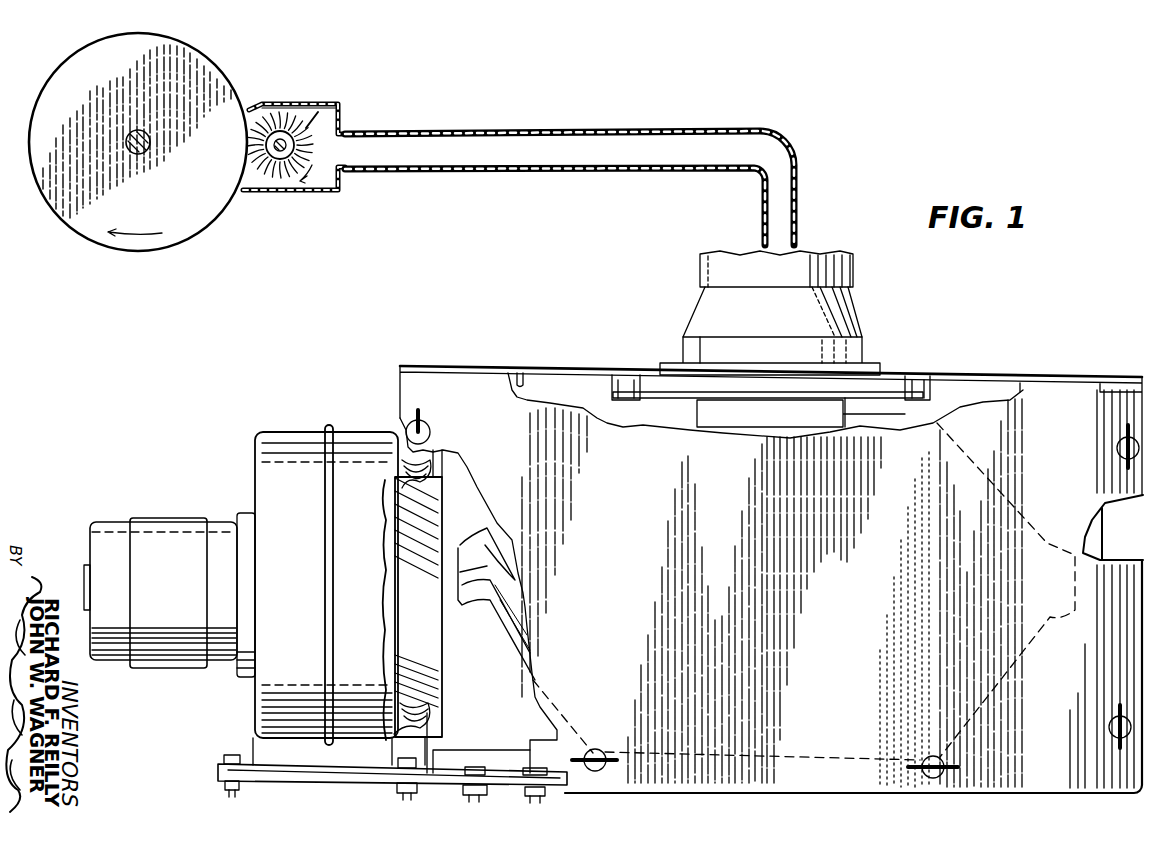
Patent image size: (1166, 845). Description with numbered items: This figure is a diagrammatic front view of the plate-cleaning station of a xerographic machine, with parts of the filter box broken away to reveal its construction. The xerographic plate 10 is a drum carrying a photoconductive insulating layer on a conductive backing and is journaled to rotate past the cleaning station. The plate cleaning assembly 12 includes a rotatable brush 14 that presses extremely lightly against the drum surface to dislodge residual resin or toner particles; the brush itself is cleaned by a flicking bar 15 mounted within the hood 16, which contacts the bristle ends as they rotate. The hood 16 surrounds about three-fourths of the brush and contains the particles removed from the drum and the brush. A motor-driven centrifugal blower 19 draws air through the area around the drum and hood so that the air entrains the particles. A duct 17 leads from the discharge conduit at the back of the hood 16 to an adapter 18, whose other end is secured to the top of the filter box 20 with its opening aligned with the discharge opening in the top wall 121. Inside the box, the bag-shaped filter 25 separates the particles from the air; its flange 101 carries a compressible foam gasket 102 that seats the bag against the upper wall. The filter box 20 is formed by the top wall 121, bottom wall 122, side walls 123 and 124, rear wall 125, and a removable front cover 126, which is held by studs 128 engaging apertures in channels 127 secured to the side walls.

The xerographic plate 10 is at (210, 228).
The plate cleaning assembly 12 is at (325, 81).
The rotatable brush 14 is at (283, 174).
The flicking bar 15 is at (318, 113).
The hood 16 is at (312, 116).
The duct 17 is at (819, 253).
The adapter 18 is at (699, 308).
The motor-driven centrifugal blower 19 is at (298, 432).
The filter box 20 is at (1072, 359).
The filter 25 is at (489, 516).
The flange 101 is at (862, 398).
The compressible gasket 102 is at (883, 383).
The top wall 121 is at (903, 380).
The bottom wall 122 is at (335, 777).
The side wall 123 is at (442, 466).
The side wall 124 is at (1093, 518).
The rear wall 125 is at (567, 392).
The front cover 126 is at (1035, 790).
The channel 127 is at (428, 449).
The stud 128 is at (421, 418).